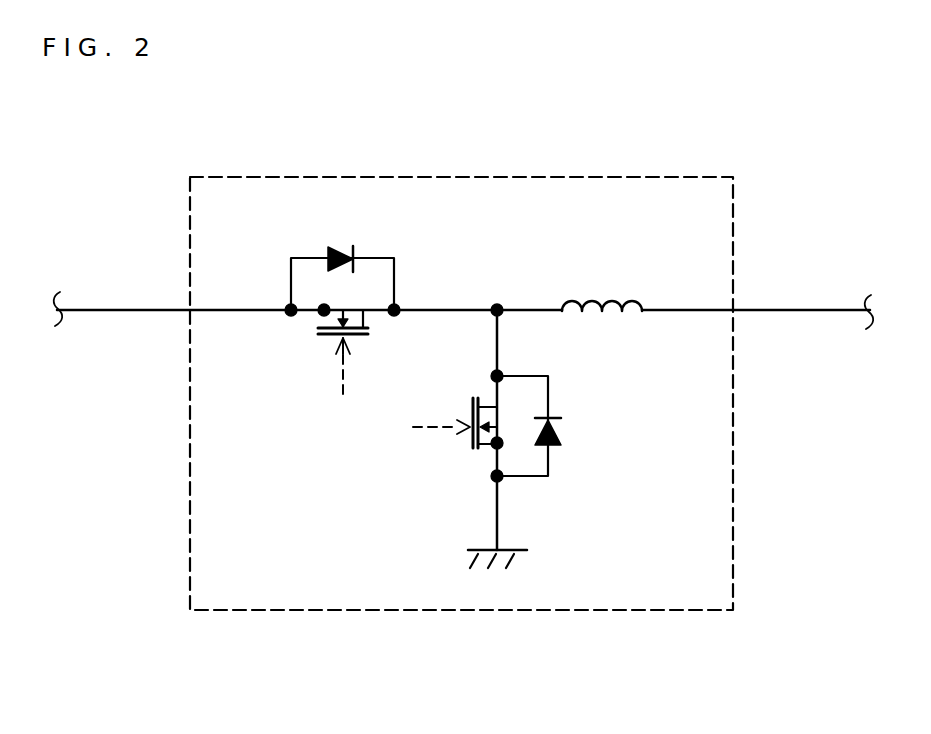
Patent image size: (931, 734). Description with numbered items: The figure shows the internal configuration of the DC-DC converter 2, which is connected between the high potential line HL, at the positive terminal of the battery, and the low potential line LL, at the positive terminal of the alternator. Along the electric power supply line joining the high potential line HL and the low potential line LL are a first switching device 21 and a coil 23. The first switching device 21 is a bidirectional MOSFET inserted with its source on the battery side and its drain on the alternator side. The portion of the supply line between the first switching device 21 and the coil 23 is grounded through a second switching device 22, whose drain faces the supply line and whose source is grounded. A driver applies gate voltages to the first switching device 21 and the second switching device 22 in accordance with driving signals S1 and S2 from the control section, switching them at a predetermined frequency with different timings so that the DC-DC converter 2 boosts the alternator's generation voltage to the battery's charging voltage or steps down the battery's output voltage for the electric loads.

The DC-DC converter 2 is at (665, 612).
The first switching device 21 is at (316, 335).
The second switching device 22 is at (470, 423).
The coil 23 is at (593, 301).
The driving signal S1 is at (342, 411).
The driving signal S2 is at (393, 427).
The high potential line HL is at (152, 294).
The low potential line LL is at (837, 298).